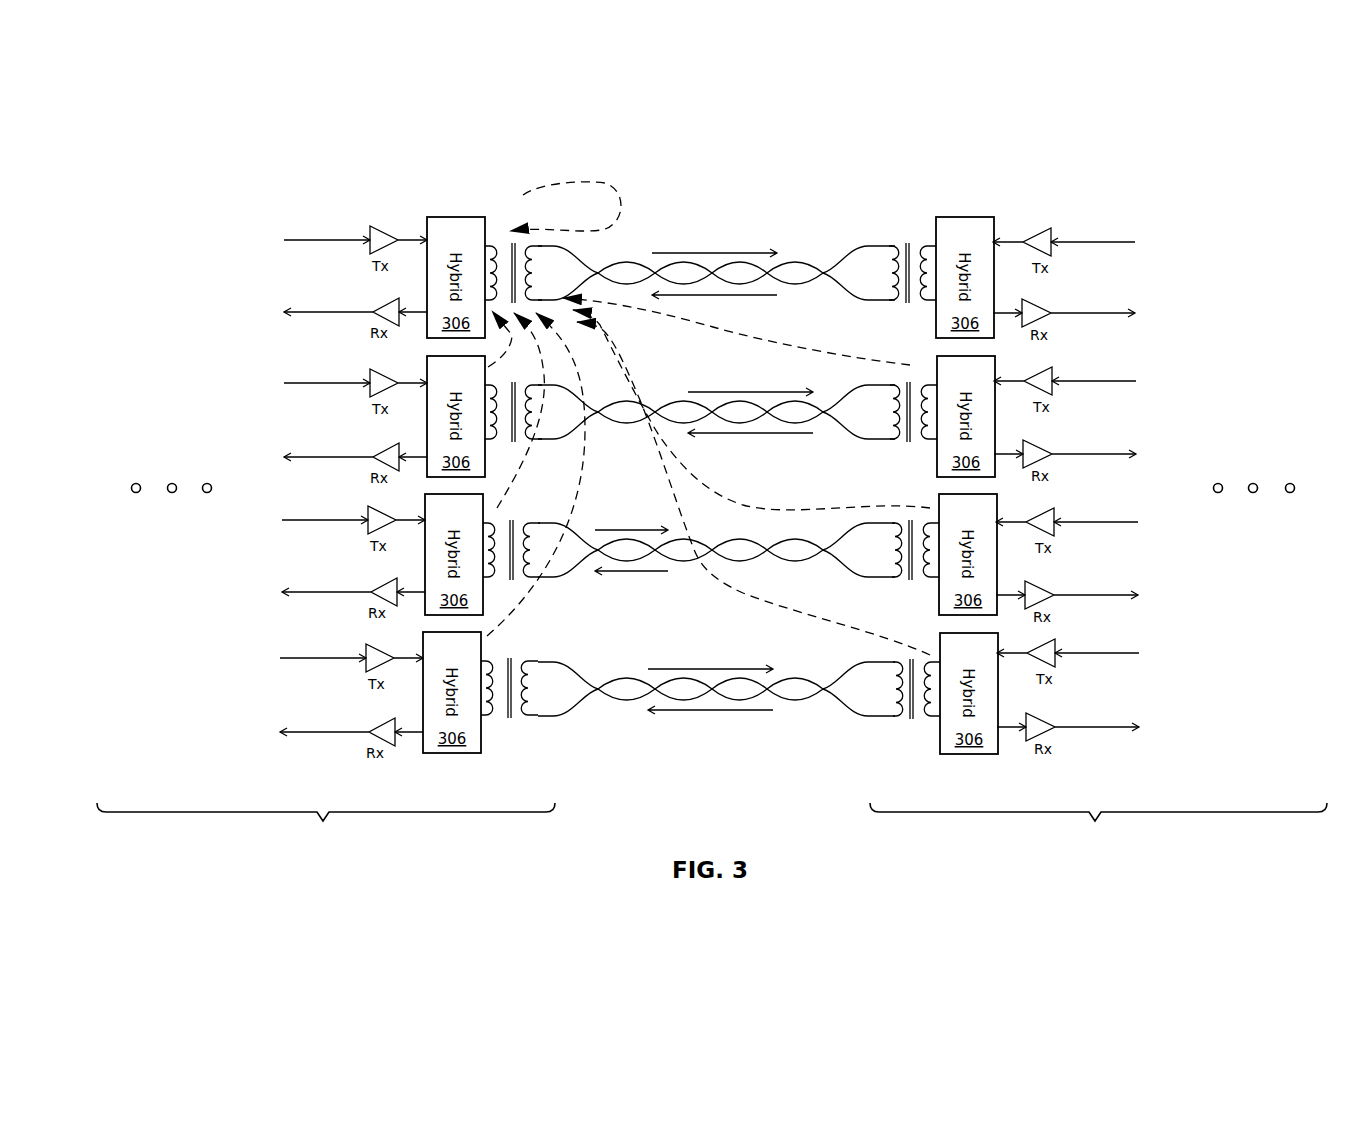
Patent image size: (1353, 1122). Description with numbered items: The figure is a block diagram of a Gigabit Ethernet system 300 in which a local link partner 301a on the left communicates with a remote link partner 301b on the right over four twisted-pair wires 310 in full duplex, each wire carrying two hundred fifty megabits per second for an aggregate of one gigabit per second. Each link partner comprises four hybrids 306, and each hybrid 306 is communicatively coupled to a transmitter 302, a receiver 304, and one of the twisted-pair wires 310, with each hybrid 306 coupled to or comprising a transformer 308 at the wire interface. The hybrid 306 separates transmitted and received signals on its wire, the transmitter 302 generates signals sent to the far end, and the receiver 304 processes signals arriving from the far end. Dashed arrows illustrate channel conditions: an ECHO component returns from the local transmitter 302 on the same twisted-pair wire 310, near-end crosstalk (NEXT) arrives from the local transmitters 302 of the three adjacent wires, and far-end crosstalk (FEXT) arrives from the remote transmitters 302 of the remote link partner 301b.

The Gigabit Ethernet system 300 is at (356, 93).
The local link partner 301a is at (487, 812).
The remote link partner 301b is at (1055, 812).
The transmitter 302 is at (709, 450).
The receiver 304 is at (709, 521).
The hybrid 306 is at (710, 485).
The transformer 308 is at (900, 240).
The twisted-pair wire 310 is at (625, 248).